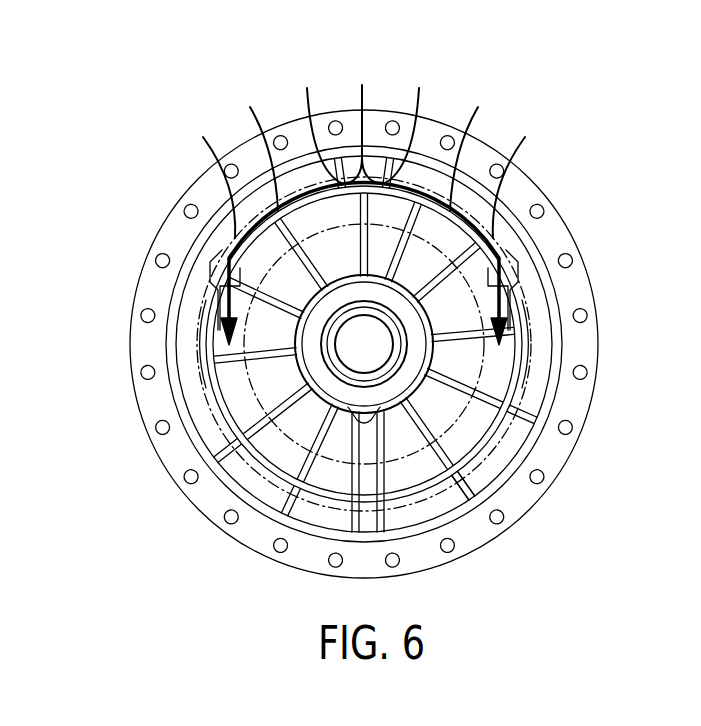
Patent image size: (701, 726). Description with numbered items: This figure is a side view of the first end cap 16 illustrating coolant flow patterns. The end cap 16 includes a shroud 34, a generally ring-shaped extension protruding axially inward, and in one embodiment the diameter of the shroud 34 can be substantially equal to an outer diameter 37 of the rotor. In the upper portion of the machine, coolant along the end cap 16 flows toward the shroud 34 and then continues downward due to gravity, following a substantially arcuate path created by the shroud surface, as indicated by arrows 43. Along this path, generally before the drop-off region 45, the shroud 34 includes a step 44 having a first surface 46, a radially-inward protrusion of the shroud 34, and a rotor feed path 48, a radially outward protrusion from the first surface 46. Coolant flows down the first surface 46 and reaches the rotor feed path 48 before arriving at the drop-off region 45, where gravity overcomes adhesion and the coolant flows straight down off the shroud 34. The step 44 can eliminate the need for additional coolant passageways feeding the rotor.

The end cap 16 is at (246, 93).
The shroud 34 is at (252, 447).
The outer diameter of the rotor 37 is at (460, 505).
The arrows 43 is at (224, 315).
The step 44 is at (215, 248).
The drop-off region 45 is at (200, 382).
The first surface 46 is at (218, 263).
The rotor feed path 48 is at (212, 277).